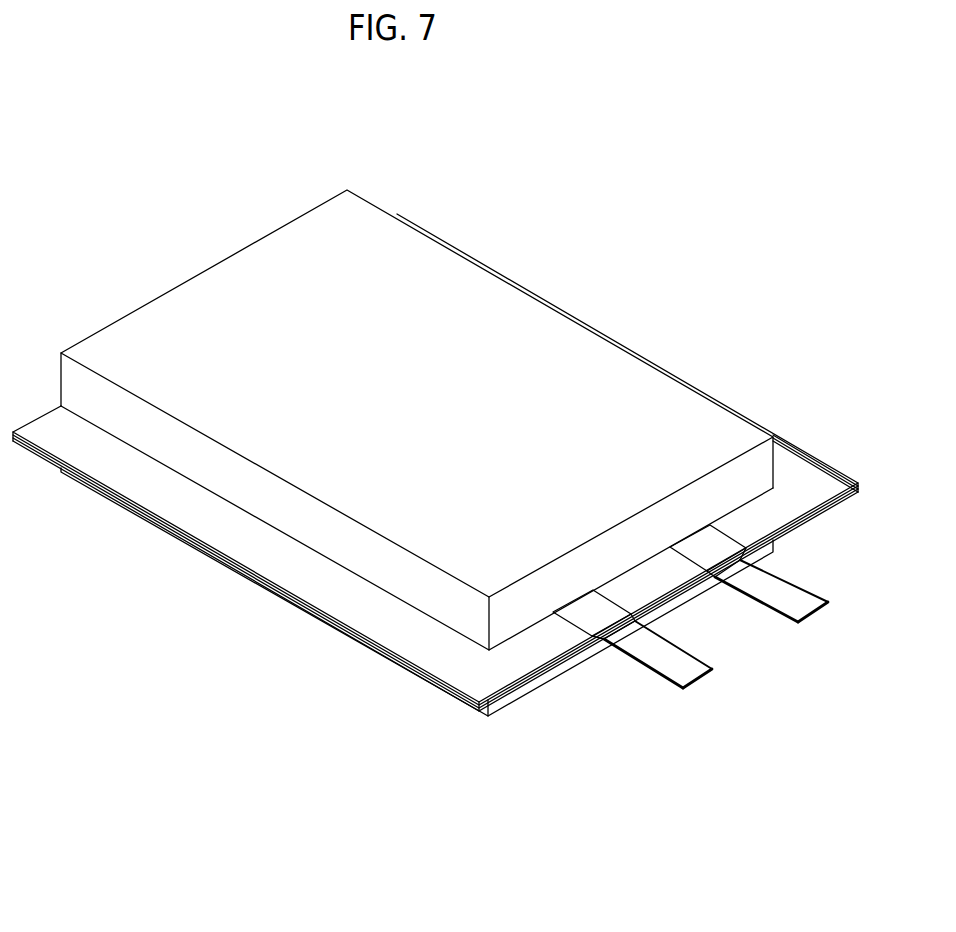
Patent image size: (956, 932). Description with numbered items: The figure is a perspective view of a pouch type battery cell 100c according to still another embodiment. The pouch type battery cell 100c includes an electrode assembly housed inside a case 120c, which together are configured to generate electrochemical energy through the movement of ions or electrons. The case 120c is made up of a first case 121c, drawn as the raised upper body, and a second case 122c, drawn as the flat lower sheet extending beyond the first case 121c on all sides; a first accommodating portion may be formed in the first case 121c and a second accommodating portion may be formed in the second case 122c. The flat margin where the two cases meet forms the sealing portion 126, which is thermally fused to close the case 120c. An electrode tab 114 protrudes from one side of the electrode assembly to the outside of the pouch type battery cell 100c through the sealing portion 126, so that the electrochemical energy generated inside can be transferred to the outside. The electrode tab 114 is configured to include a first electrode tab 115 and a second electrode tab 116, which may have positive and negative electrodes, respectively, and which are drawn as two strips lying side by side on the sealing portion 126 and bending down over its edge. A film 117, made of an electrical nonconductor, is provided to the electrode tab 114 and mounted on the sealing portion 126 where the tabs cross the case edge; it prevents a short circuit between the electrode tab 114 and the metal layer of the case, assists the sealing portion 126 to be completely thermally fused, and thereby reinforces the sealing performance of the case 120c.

The pouch type battery cell 100c is at (122, 101).
The case 120c is at (400, 420).
The first case 121c is at (222, 270).
The second case 122c is at (288, 593).
The sealing portion 126 is at (494, 678).
The electrode tab 114 is at (690, 641).
The first electrode tab 115 is at (690, 672).
The second electrode tab 116 is at (791, 608).
The film 117 is at (743, 548).